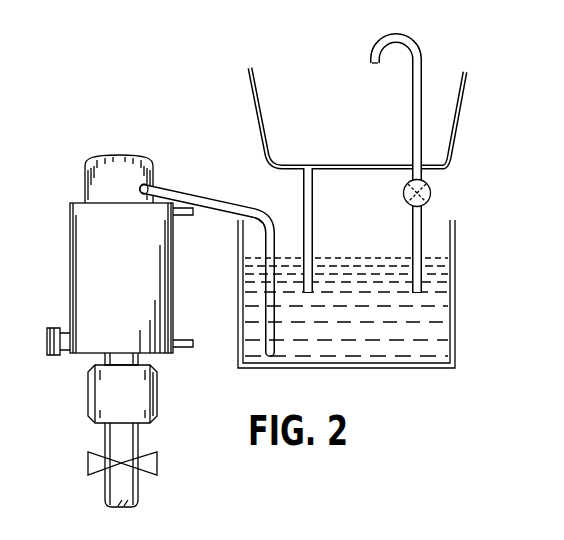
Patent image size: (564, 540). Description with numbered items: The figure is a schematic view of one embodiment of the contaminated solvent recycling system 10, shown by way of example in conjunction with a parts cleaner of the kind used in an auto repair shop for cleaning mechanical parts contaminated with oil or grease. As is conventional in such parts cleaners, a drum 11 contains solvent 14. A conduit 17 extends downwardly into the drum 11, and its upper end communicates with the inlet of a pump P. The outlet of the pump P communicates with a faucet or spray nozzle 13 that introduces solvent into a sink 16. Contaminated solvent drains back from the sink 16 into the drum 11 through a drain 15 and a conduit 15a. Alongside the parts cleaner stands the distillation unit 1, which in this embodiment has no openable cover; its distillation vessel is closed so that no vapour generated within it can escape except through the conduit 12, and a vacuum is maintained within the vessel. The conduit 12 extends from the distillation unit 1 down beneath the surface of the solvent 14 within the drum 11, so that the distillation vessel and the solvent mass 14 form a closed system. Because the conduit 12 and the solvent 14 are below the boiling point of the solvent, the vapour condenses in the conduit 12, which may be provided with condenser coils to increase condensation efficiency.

The distillation unit 1 is at (63, 211).
The liquid recirculation apparatus 10 is at (243, 96).
The drum 11 is at (457, 302).
The conduit 12 is at (188, 193).
The faucet or spray nozzle 13 is at (372, 47).
The solvent 14 is at (363, 336).
The drain 15 is at (309, 167).
The conduit 15a is at (318, 190).
The sink 16 is at (461, 102).
The conduit 17 is at (413, 238).
The pump P is at (436, 193).